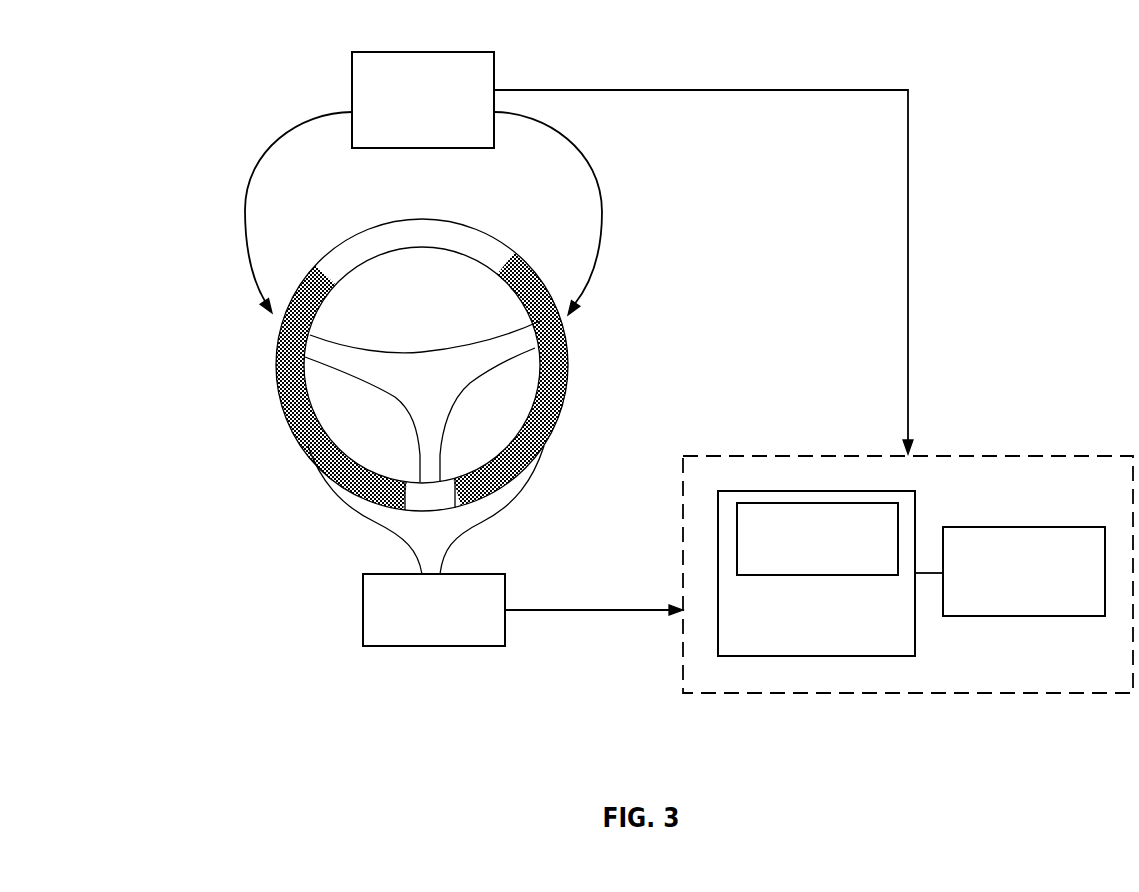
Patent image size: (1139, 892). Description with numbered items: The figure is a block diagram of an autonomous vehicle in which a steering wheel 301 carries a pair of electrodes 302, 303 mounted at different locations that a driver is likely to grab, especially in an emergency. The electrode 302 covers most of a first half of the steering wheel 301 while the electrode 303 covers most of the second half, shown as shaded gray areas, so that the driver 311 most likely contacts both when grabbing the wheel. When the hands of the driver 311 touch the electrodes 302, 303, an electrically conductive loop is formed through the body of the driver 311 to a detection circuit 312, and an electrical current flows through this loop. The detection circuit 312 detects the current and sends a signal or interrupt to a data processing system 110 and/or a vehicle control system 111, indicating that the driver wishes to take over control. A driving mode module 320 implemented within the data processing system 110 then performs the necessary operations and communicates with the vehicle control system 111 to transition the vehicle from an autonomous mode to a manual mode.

The steering wheel 301 is at (438, 390).
The electrode 302 is at (292, 420).
The electrode 303 is at (553, 383).
The driver 311 is at (405, 120).
The detection circuit 312 is at (420, 642).
The driving mode module 320 is at (833, 571).
The data processing system 110 is at (805, 646).
The vehicle control system 111 is at (1008, 593).